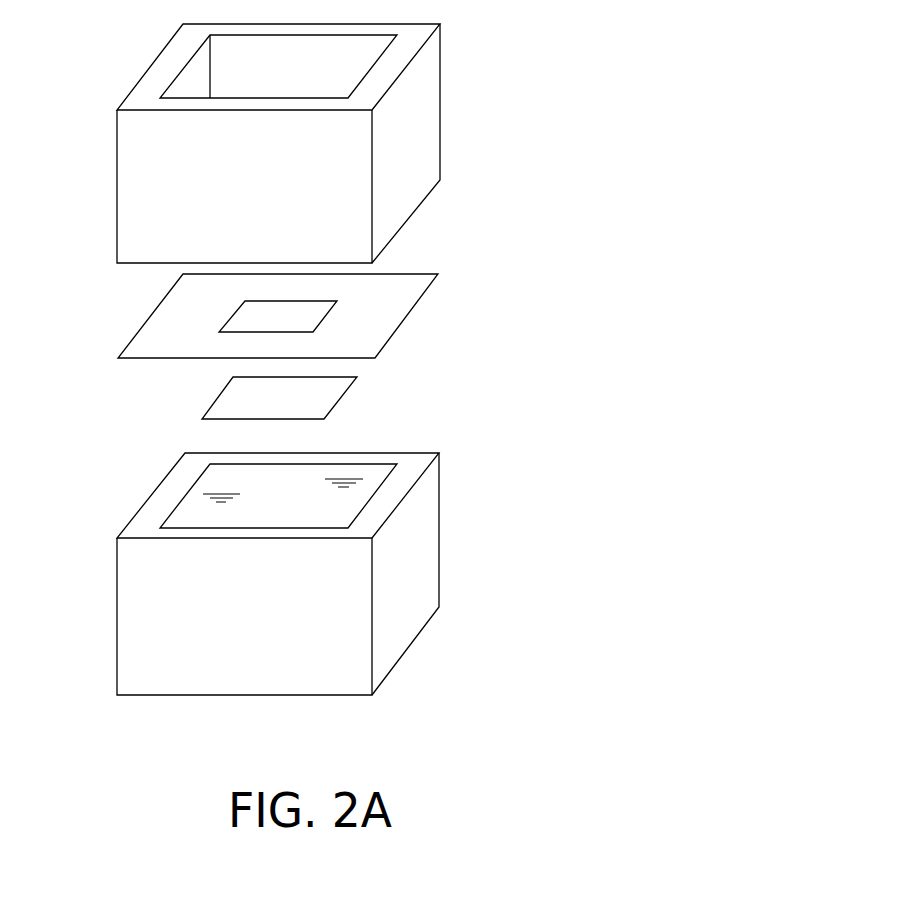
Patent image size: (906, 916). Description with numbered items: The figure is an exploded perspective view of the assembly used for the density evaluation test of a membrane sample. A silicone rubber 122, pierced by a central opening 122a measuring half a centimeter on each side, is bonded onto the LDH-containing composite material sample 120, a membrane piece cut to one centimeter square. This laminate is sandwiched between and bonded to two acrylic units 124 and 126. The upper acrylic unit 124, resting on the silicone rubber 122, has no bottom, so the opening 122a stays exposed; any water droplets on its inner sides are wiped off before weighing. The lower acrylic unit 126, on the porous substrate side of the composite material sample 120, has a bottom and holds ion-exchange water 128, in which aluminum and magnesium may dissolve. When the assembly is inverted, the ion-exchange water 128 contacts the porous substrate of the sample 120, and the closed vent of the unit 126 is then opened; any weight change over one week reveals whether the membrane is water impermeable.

The acrylic unit 124 is at (418, 140).
The silicone rubber 122 is at (403, 321).
The central opening 122a is at (278, 310).
The LDH-containing composite material sample 120 is at (400, 385).
The acrylic unit 126 is at (430, 545).
The ion-exchange water 128 is at (283, 493).